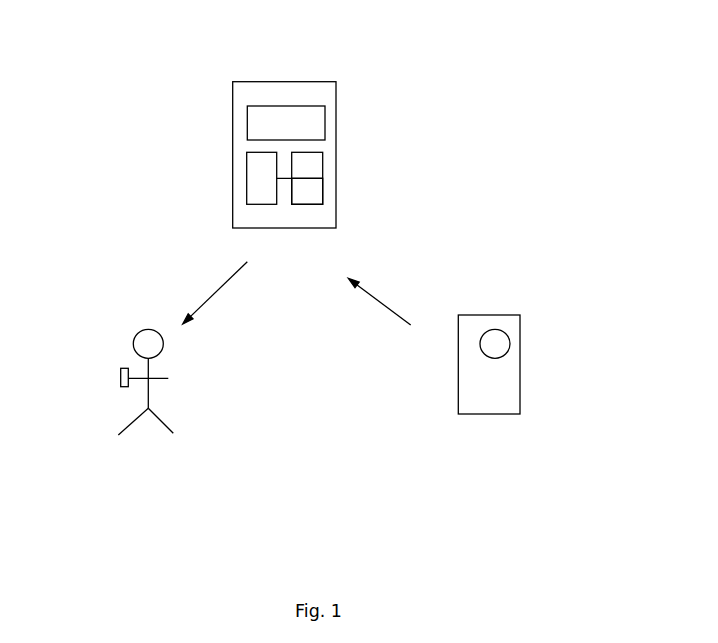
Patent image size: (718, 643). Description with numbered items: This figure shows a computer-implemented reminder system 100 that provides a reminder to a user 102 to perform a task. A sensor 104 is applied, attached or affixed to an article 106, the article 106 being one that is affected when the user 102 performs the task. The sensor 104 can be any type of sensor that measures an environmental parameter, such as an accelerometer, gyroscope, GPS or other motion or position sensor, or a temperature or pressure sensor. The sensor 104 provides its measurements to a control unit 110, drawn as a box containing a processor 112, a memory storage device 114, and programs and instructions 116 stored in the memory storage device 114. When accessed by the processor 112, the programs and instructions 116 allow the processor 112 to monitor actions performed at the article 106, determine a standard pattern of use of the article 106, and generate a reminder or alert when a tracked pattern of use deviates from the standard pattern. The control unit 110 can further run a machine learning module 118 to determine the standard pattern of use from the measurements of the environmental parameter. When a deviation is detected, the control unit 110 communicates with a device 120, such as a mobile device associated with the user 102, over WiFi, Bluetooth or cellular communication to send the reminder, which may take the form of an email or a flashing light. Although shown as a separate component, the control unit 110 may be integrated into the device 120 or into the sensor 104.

The computer-implemented reminder system 100 is at (622, 93).
The user 102 is at (134, 399).
The sensor 104 is at (507, 333).
The article 106 is at (520, 363).
The control unit 110 is at (298, 82).
The processor 112 is at (247, 183).
The memory storage device 114 is at (325, 165).
The programs and instructions 116 is at (325, 192).
The machine learning module 118 is at (325, 120).
The device 120 is at (121, 375).